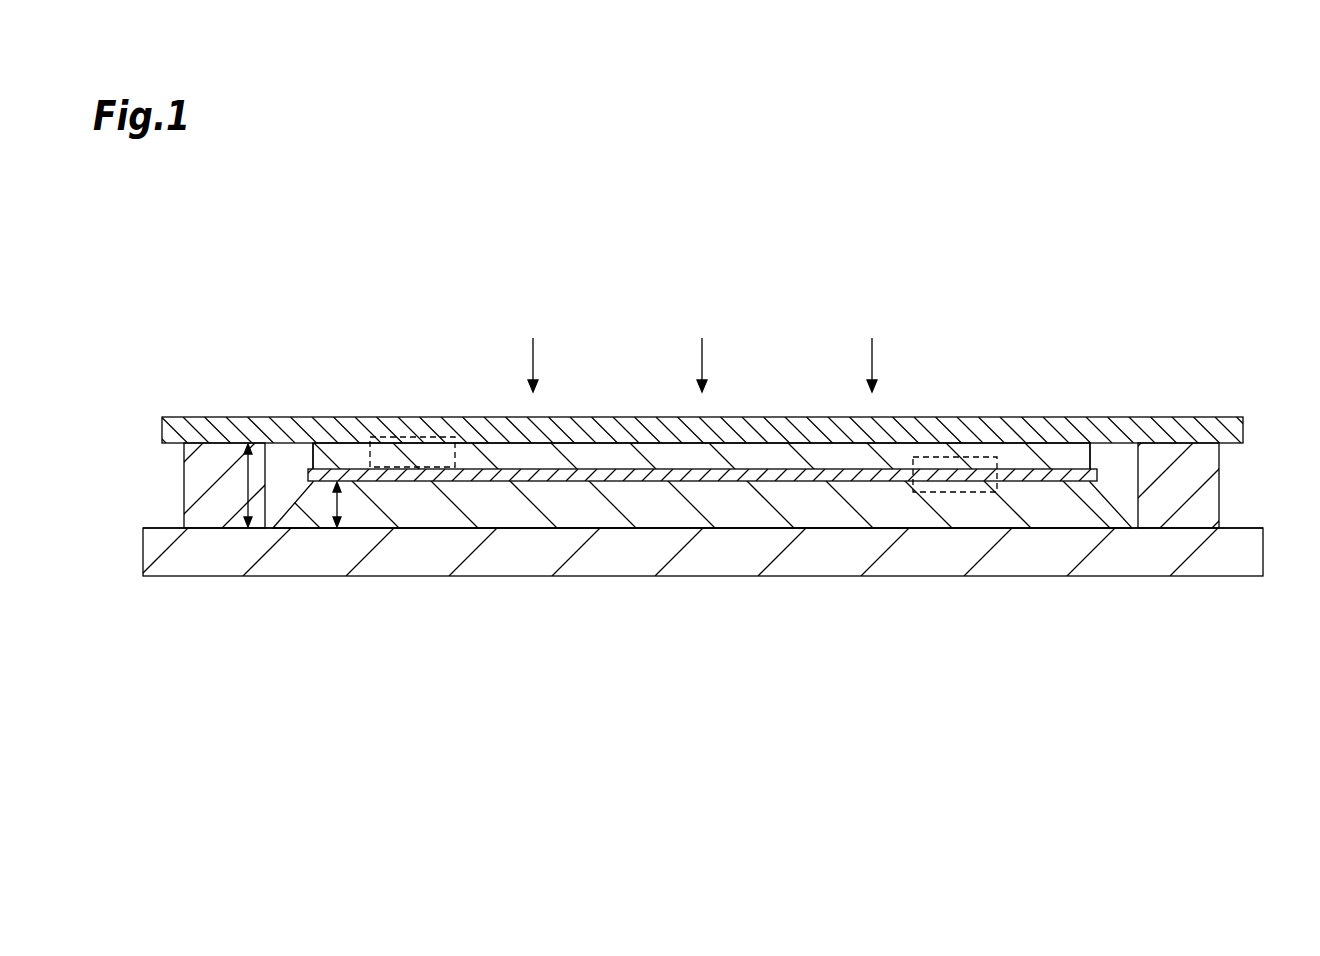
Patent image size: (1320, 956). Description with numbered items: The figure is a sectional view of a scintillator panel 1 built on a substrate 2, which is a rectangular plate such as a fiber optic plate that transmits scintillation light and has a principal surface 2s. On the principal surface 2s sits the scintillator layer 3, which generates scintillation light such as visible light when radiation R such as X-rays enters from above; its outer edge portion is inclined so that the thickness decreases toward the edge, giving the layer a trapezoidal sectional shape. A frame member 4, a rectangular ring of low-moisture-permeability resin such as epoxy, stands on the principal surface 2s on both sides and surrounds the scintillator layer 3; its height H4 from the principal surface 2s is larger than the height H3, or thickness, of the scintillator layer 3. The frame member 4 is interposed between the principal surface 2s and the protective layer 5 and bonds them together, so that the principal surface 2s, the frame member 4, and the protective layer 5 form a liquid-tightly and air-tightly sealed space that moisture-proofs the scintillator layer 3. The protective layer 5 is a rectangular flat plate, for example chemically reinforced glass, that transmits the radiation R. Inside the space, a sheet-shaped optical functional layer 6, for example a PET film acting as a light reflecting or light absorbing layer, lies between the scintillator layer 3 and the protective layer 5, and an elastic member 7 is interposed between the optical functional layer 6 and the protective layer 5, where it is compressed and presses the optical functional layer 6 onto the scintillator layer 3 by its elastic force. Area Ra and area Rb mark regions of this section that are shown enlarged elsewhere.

The scintillator panel 1 is at (1093, 246).
The substrate 2 is at (1263, 559).
The principal surface 2s is at (1243, 528).
The scintillator layer 3 is at (846, 512).
The frame member 4 is at (197, 483).
The protective layer 5 is at (1082, 430).
The optical functional layer 6 is at (1037, 475).
The elastic member 7 is at (1011, 455).
The radiation R is at (535, 352).
The area Ra is at (410, 437).
The area Rb is at (943, 440).
The height of the scintillator layer H3 is at (340, 502).
The height of the frame member H4 is at (246, 495).